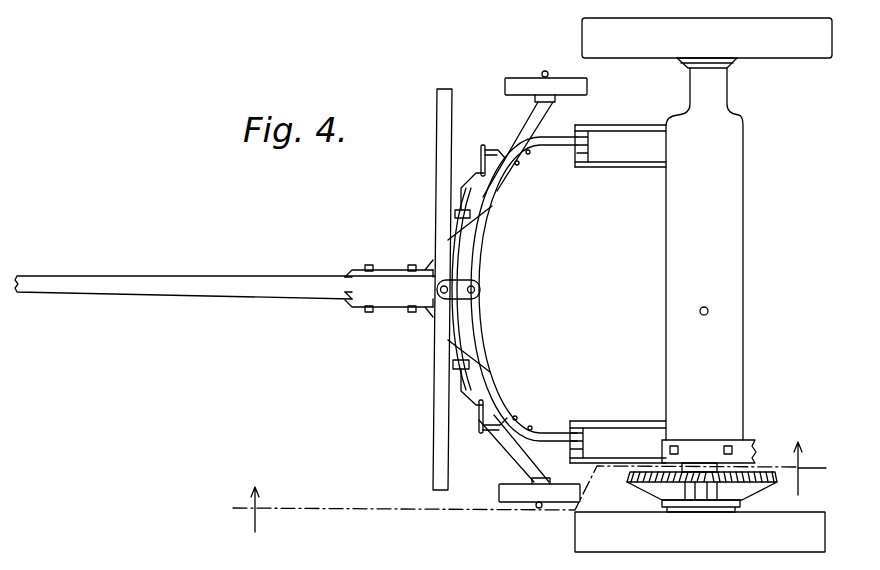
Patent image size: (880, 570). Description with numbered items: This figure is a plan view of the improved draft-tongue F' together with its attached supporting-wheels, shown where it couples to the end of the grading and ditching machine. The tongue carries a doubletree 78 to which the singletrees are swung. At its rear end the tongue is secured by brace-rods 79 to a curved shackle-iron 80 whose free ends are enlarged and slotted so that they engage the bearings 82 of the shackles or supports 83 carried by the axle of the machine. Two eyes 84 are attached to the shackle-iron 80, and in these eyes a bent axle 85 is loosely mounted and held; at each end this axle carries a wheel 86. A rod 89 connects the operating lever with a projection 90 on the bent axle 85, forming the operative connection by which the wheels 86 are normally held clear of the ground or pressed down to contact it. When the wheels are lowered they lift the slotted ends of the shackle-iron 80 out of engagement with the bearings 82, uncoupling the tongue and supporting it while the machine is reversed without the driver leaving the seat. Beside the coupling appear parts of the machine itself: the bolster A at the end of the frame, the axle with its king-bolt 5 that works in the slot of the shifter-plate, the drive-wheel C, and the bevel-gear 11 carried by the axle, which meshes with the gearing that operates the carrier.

The draft-tongue F' is at (225, 297).
The doubletree 78 is at (435, 383).
The brace-rods 79 is at (478, 240).
The curved shackle-iron 80 is at (479, 224).
The bearings 82 is at (583, 158).
The shackles or supports 83 is at (630, 121).
The eyes 84 is at (455, 215).
The bent axle 85 is at (521, 124).
The wheel 86 is at (523, 84).
The rod 89 is at (481, 158).
The projection 90 is at (492, 150).
The bevel-gear 11 is at (759, 474).
The king-bolt 5 is at (715, 311).
The bolster A is at (707, 240).
The drive-wheel C is at (700, 532).